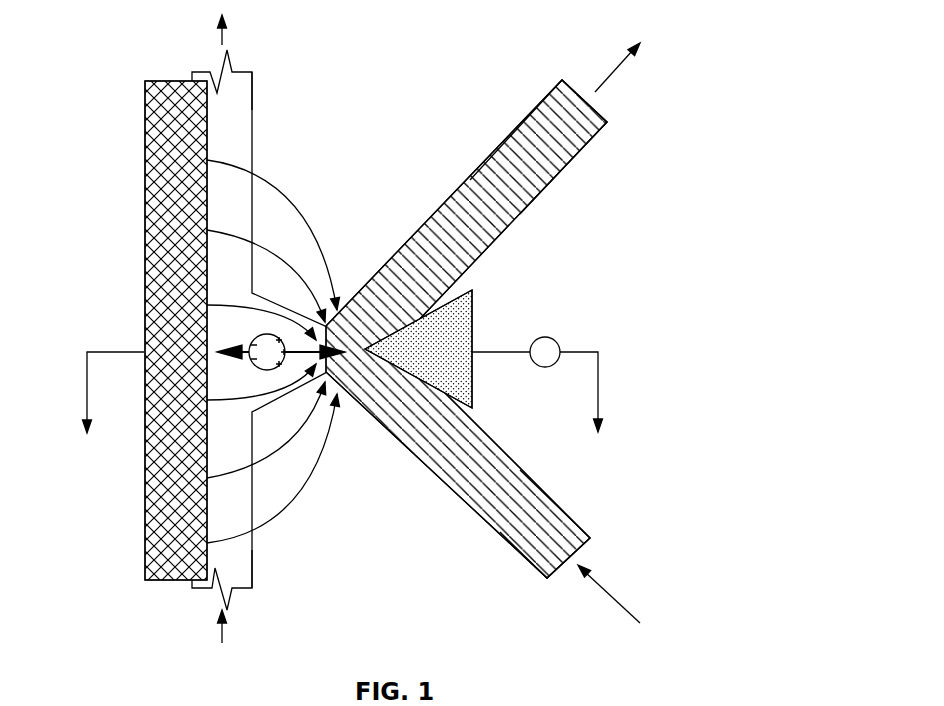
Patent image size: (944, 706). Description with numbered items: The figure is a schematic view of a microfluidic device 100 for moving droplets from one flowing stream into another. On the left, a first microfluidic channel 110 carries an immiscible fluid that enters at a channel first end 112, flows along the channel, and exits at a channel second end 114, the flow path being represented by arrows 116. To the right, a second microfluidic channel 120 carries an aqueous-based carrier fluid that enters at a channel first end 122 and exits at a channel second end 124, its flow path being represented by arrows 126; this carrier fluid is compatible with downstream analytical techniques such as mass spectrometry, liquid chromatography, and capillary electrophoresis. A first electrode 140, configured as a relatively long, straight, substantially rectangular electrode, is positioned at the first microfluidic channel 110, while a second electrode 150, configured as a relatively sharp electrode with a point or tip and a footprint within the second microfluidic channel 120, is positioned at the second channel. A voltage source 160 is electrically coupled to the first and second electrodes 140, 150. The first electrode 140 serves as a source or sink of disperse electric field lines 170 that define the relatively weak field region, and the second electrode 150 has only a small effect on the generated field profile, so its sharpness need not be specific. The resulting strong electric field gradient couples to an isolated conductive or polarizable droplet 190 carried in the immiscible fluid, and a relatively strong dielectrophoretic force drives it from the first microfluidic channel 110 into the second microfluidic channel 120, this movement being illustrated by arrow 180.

The microfluidic device 100 is at (118, 62).
The first microfluidic channel 110 is at (252, 163).
The channel first end 112 is at (253, 580).
The channel second end 114 is at (252, 83).
The arrows 116 is at (223, 35).
The second microfluidic channel 120 is at (485, 522).
The channel first end 122 is at (568, 513).
The channel second end 124 is at (594, 142).
The arrows 126 is at (615, 68).
The first electrode 140 is at (167, 218).
The second electrode 150 is at (473, 380).
The voltage source 160 is at (545, 337).
The electric field lines 170 is at (308, 236).
The arrow 180 is at (340, 408).
The droplet 190 is at (266, 372).